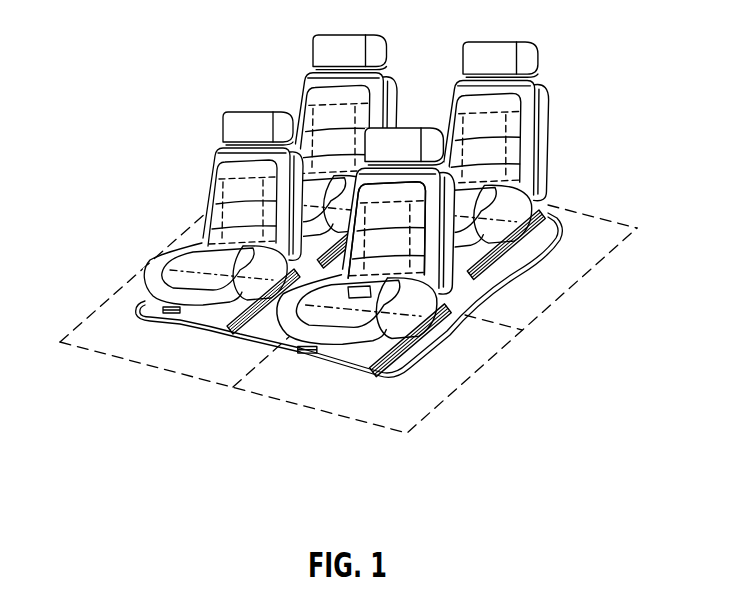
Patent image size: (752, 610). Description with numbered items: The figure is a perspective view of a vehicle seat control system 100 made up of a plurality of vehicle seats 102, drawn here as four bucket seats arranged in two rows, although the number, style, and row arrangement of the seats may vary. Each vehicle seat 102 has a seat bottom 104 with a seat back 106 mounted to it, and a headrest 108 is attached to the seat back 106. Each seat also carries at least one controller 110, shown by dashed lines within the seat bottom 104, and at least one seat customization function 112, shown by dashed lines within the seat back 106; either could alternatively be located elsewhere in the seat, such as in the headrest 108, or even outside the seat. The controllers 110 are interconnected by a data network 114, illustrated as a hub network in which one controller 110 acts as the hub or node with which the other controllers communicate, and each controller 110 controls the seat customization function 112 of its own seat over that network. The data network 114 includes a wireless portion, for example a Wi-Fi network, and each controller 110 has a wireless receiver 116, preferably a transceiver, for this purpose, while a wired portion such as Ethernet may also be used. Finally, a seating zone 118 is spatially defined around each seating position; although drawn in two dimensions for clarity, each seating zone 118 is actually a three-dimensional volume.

The vehicle seat control system 100 is at (353, 250).
The vehicle seat 102 is at (451, 242).
The seat bottom 104 is at (413, 307).
The seat back 106 is at (447, 222).
The headrest 108 is at (400, 137).
The controller 110 is at (325, 305).
The seat customization function 112 is at (414, 262).
The data network 114 is at (247, 333).
The wireless receiver 116 is at (398, 372).
The seating zone 118 is at (547, 307).